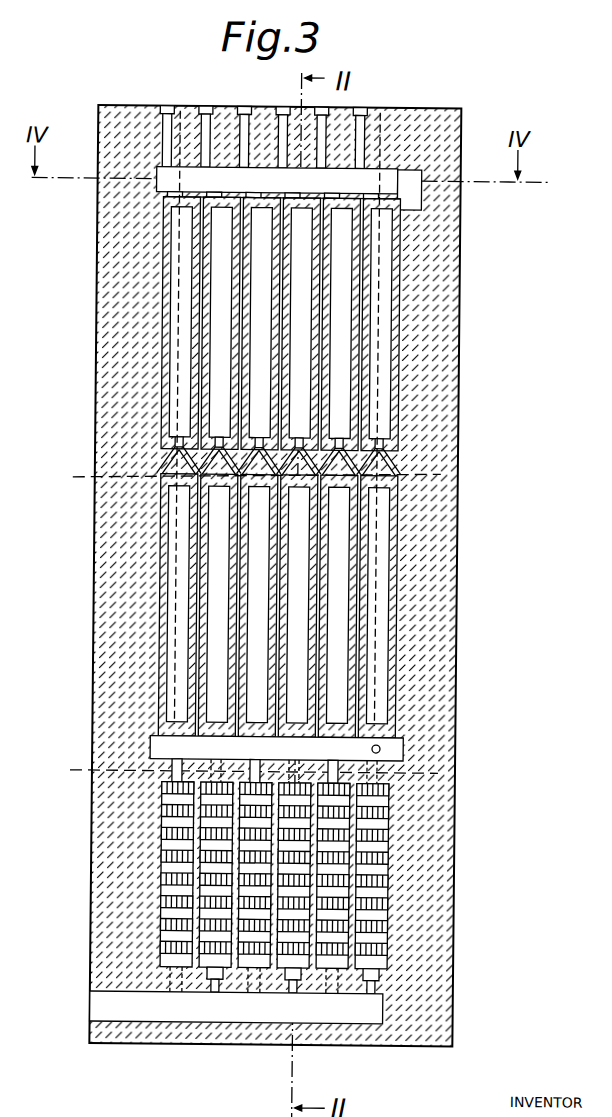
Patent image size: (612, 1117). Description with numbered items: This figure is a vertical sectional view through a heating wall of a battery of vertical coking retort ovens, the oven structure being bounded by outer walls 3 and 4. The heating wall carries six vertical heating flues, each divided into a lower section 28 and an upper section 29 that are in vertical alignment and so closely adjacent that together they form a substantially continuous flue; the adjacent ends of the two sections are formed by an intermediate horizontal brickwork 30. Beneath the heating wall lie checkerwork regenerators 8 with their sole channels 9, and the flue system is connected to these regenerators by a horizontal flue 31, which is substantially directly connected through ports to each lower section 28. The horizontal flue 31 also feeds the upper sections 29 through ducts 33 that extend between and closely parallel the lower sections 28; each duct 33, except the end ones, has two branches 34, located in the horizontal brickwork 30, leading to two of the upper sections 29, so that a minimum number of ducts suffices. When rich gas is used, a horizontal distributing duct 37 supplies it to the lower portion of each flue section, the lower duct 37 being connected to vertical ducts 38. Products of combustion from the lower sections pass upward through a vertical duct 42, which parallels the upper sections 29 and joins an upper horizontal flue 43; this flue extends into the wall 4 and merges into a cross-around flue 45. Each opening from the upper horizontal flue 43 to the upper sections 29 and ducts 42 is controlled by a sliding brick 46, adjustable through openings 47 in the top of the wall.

The outer wall 3 is at (99, 850).
The outer wall 4 is at (438, 331).
The regenerator 8 is at (395, 881).
The sole channel 9 is at (216, 1011).
The lower section 28 is at (216, 673).
The upper section 29 is at (213, 369).
The horizontal brickwork 30 is at (174, 463).
The horizontal flue 31 is at (154, 746).
The duct 33 is at (200, 591).
The branch 34 is at (389, 466).
The horizontal distributing duct 37 is at (236, 626).
The vertical duct 38 is at (382, 748).
The vertical duct 42 is at (198, 301).
The upper horizontal flue 43 is at (153, 187).
The cross-around flue 45 is at (418, 200).
The sliding brick 46 is at (160, 197).
The opening 47 is at (198, 107).